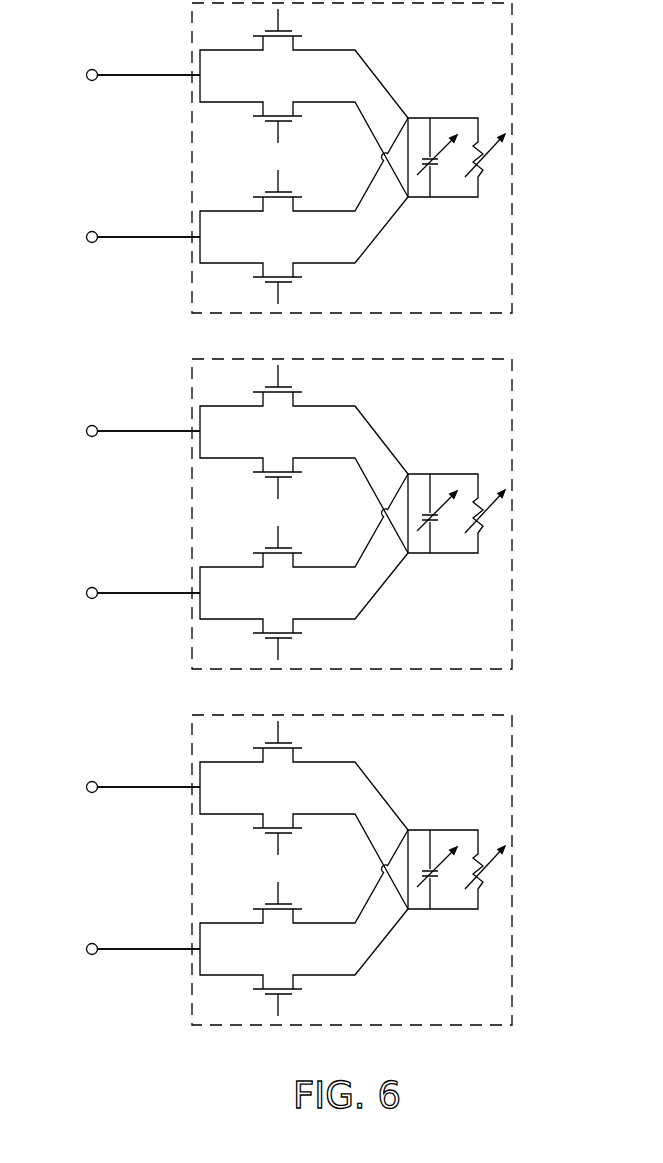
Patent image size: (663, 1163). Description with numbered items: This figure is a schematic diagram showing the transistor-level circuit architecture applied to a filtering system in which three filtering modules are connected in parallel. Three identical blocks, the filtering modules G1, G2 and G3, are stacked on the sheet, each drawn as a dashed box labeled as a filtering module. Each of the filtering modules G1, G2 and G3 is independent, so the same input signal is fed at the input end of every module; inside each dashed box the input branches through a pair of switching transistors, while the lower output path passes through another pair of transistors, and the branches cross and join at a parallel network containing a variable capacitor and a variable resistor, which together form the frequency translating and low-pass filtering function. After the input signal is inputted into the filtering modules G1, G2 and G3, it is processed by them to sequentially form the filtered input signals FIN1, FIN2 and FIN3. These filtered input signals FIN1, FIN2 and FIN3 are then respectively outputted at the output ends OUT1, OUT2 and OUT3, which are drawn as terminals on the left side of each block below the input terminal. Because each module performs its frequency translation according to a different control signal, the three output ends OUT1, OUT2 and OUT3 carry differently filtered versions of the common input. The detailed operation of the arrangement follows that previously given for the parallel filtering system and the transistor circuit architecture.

The filtering module G1 is at (298, 158).
The filtering module G2 is at (298, 514).
The filtering module G3 is at (298, 870).
The filtered input signal FIN1 is at (149, 222).
The filtered input signal FIN2 is at (149, 573).
The filtered input signal FIN3 is at (149, 929).
The output end OUT1 is at (111, 233).
The output end OUT2 is at (111, 589).
The output end OUT3 is at (111, 945).